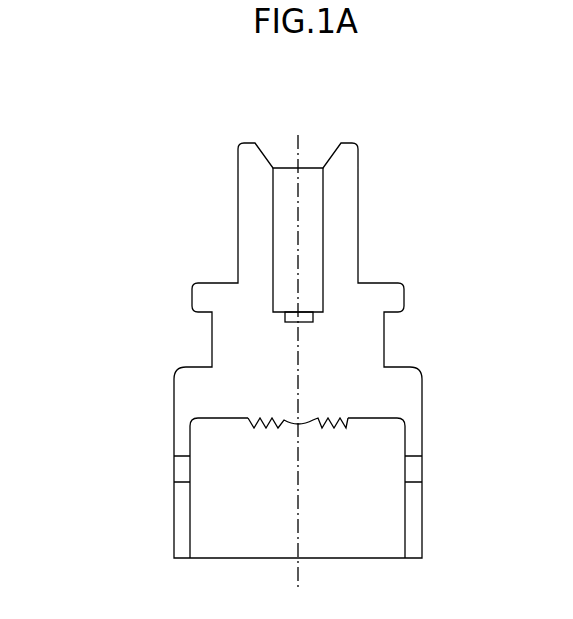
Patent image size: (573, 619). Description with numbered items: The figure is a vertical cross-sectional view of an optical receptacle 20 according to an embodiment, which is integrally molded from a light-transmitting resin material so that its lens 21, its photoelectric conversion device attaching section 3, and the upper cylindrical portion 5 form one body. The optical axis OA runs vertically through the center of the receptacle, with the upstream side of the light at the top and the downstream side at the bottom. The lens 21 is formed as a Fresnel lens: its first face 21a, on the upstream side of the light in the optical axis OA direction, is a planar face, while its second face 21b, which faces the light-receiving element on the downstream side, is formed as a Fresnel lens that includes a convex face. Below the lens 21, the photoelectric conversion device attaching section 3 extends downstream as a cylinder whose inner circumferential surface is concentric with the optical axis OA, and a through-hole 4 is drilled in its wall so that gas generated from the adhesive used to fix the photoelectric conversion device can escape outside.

The optical receptacle 20 is at (199, 190).
The cap 5 is at (237, 240).
The photoelectric conversion device attaching section 3 is at (173, 508).
The through-hole 4 is at (182, 469).
The lens 21 is at (93, 335).
The first face 21a is at (285, 314).
The second face 21b is at (292, 424).
The optical axis OA is at (298, 493).